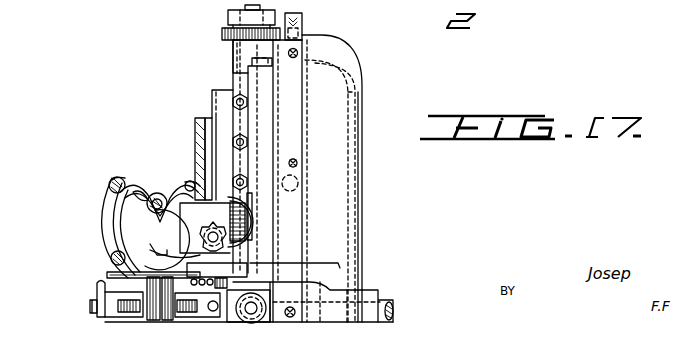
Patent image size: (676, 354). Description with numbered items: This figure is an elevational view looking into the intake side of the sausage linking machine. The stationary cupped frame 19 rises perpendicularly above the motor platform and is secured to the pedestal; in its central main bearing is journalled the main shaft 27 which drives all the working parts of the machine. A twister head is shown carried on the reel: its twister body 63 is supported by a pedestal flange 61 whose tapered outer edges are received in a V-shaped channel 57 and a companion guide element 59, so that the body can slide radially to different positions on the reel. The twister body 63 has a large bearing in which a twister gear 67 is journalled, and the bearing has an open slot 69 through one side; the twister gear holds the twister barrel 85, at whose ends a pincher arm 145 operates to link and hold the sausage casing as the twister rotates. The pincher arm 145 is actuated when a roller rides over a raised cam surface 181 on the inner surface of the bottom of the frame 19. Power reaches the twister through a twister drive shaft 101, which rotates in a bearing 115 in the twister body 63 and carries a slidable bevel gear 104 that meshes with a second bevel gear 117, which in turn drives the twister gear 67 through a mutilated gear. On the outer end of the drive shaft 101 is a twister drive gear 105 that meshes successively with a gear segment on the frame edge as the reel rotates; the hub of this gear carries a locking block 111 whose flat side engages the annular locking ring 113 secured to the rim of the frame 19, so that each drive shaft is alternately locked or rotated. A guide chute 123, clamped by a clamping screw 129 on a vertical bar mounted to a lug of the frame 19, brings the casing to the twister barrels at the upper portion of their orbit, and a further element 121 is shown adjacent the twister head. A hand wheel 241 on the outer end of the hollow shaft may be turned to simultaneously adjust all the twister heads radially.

The frame 19 is at (364, 195).
The main shaft 27 is at (383, 303).
The V-shaped channel 57 is at (223, 88).
The hex nut 59 is at (233, 102).
The pedestal flange 61 is at (198, 118).
The twister body 63 is at (190, 183).
The twister gear 67 is at (145, 178).
The open slot 69 is at (137, 190).
The twister barrel 85 is at (135, 222).
The twister drive shaft 101 is at (250, 53).
The bevel gear 104 is at (245, 213).
The twister drive gear 105 is at (222, 35).
The locking block 111 is at (228, 15).
The locking ring 113 is at (292, 13).
The bearing 115 is at (296, 51).
The second bevel gear 117 is at (240, 224).
The roller 121 is at (157, 194).
The guide chute 123 is at (117, 185).
The clamping screw 129 is at (199, 236).
The pincher arm 145 is at (115, 256).
The raised cam surface 181 is at (357, 108).
The hand wheel 241 is at (98, 285).